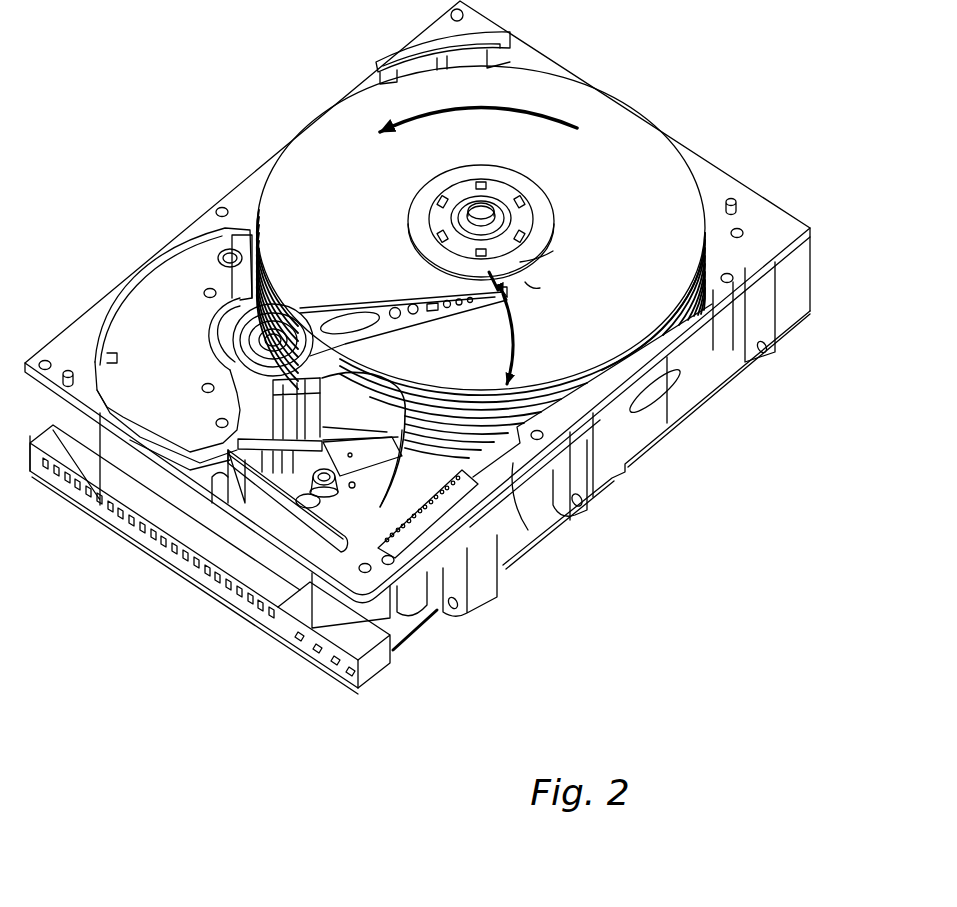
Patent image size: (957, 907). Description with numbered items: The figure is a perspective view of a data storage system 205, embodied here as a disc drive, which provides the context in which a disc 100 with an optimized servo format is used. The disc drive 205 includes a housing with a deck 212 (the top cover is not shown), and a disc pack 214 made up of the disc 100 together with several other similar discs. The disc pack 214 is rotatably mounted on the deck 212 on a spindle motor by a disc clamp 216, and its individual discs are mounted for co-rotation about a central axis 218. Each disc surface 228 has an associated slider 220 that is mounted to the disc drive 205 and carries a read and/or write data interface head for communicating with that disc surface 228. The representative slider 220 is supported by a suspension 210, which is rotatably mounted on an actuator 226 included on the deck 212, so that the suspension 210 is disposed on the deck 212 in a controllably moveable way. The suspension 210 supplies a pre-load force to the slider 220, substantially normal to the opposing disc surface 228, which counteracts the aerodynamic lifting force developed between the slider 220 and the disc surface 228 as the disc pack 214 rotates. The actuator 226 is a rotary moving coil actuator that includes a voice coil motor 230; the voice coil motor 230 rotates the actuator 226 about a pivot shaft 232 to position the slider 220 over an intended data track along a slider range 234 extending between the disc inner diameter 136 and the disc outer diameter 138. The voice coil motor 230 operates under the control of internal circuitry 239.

The disc 100 is at (336, 143).
The disc inner diameter 136 is at (553, 251).
The disc outer diameter 138 is at (695, 254).
The data storage system 205 is at (724, 88).
The suspension 210 is at (433, 293).
The deck 212 is at (750, 214).
The disc pack 214 is at (585, 116).
The disc clamp 216 is at (447, 206).
The central axis 218 is at (497, 218).
The slider 220 is at (511, 296).
The actuator 226 is at (240, 315).
The disc surface 228 is at (533, 288).
The voice coil motor 230 is at (167, 308).
The pivot shaft 232 is at (282, 330).
The slider range 234 is at (515, 340).
The internal circuitry 239 is at (412, 503).